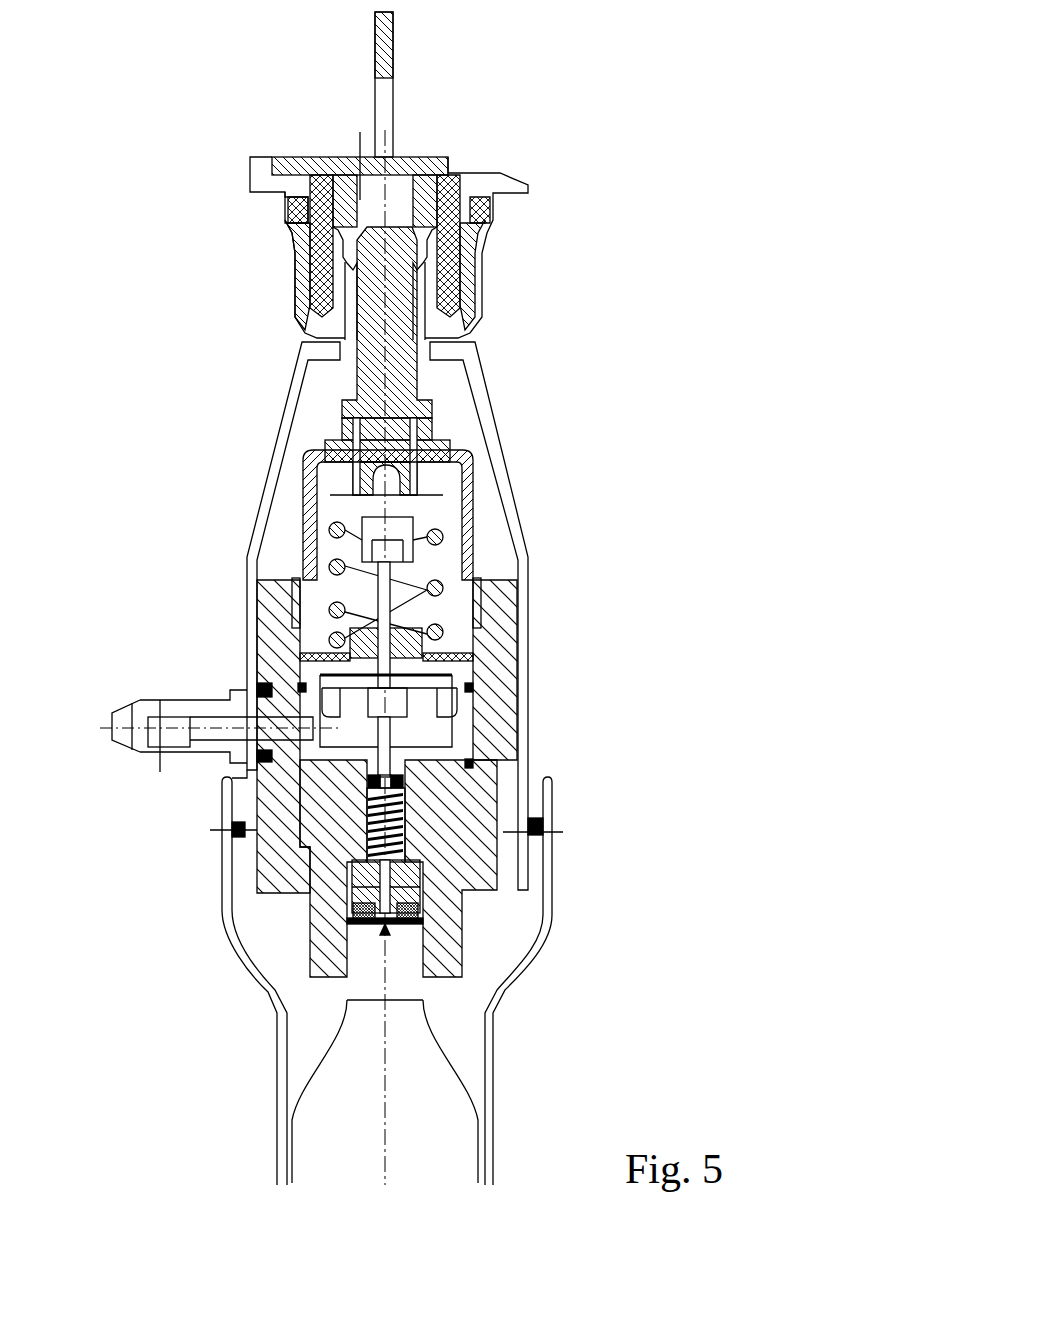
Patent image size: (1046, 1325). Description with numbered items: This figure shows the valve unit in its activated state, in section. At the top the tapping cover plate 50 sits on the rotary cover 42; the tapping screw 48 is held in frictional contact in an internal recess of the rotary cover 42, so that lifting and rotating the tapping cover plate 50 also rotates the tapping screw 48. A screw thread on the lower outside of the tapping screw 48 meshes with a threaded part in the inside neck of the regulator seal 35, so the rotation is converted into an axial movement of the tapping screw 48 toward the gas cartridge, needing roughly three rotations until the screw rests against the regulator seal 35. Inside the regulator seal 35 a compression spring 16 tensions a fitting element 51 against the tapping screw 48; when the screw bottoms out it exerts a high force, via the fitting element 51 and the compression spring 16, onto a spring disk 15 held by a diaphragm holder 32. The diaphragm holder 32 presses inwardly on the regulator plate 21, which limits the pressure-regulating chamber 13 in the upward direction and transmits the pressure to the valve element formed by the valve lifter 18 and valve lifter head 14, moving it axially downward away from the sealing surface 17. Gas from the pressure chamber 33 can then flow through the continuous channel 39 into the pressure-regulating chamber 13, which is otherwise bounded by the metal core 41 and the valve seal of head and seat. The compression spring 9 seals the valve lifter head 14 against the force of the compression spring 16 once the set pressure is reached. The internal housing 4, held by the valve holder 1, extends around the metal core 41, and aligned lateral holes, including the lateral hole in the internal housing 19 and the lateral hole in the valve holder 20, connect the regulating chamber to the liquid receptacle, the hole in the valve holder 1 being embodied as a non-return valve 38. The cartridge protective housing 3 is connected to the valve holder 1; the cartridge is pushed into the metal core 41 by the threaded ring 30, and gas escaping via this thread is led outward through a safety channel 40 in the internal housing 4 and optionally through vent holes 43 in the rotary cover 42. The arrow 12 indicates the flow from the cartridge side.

The valve holder 1 is at (480, 405).
The cartridge protective housing 3 is at (493, 1000).
The internal housing 4 is at (493, 630).
The compression spring 9 is at (405, 838).
The flow direction 12 is at (385, 935).
The pressure-regulating chamber 13 is at (420, 725).
The valve lifter head 14 is at (393, 788).
The spring disk 15 is at (298, 688).
The compression spring 16 is at (340, 595).
The sealing surface for valve lifter 17 is at (367, 775).
The valve lifter 18 is at (390, 742).
The lateral hole in the internal housing 19 is at (275, 725).
The lateral hole in the valve holder 20 is at (223, 720).
The regulator plate 21 is at (442, 693).
The threaded ring 30 is at (423, 953).
The diaphragm holder 32 is at (410, 670).
The pressure chamber 33 is at (368, 792).
The regulator seal 35 is at (466, 513).
The non-return valve 38 is at (180, 712).
The continuous channel 39 is at (397, 762).
The safety channel 40 is at (508, 868).
The metal core 41 is at (448, 907).
The rotary cover 42 is at (417, 163).
The vent hole 43 is at (358, 172).
The tapping screw 48 is at (397, 343).
The tapping cover plate 50 is at (393, 60).
The fitting element 51 is at (396, 505).